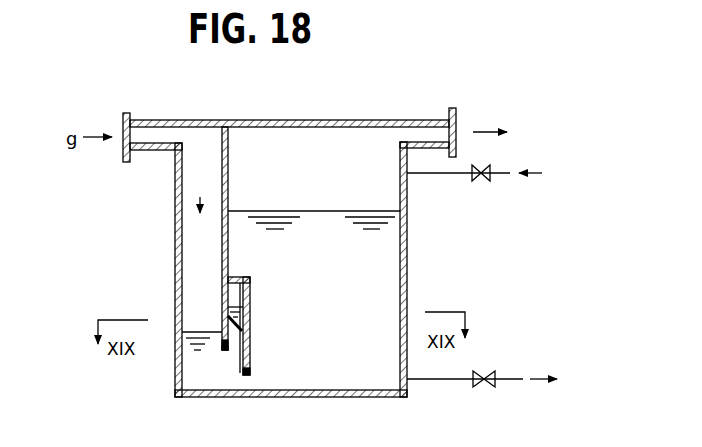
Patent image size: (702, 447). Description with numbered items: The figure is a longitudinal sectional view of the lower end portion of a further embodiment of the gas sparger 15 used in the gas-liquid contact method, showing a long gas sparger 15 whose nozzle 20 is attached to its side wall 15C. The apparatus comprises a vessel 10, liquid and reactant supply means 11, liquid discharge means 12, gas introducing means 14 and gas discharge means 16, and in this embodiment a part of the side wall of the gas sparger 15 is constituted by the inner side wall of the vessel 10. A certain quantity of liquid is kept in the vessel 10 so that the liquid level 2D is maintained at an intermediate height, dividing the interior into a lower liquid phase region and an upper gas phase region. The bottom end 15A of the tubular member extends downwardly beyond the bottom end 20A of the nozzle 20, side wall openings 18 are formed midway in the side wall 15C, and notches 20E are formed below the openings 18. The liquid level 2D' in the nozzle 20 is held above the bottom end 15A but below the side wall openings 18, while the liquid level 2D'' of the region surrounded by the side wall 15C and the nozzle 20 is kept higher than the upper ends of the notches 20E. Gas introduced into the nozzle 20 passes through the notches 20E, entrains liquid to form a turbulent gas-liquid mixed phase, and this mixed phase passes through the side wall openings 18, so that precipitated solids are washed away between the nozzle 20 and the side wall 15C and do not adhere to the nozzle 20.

The vessel 10 is at (409, 258).
The liquid and reactant supply means 11 is at (450, 173).
The liquid discharge means 12 is at (432, 380).
The gas introducing means 14 is at (172, 120).
The gas sparger 15 is at (219, 263).
The bottom end of the tubular member 15A is at (247, 375).
The side wall of the sparger 15C is at (228, 150).
The gas discharge means 16 is at (414, 118).
The side wall openings 18 is at (247, 297).
The nozzle 20 is at (250, 337).
The bottom end of the nozzle 20A is at (225, 350).
The notches 20E is at (223, 337).
The liquid level 2D is at (314, 149).
The liquid level in the nozzle 2D' is at (170, 318).
The liquid level of the region between side wall and nozzle 2D'' is at (270, 285).